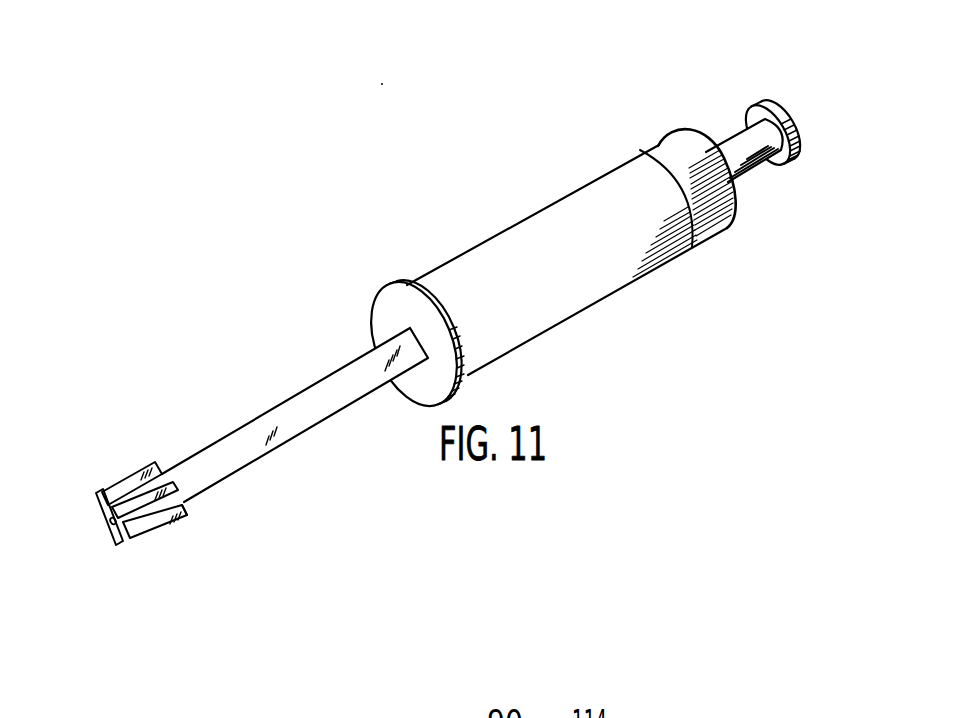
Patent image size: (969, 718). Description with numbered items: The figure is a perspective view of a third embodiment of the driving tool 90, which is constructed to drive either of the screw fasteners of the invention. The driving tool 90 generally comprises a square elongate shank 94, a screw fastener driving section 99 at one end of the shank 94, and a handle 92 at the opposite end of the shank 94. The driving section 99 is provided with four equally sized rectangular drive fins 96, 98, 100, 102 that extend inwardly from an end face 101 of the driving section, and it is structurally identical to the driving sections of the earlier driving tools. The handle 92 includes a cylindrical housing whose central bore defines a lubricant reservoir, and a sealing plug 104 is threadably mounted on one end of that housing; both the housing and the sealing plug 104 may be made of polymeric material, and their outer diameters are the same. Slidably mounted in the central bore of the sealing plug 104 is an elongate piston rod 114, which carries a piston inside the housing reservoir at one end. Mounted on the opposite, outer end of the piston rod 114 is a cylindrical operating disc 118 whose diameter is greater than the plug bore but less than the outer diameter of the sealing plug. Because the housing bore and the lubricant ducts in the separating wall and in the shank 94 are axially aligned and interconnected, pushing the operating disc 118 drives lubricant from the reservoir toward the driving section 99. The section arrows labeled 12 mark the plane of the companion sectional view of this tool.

The section line 12- 12 is at (102, 528).
The driving tool 90 is at (421, 142).
The handle 92 is at (661, 285).
The square elongate shank 94 is at (300, 421).
The drive fin 96 is at (178, 490).
The drive fin 98 is at (136, 480).
The screw fastener driving section 99 is at (186, 539).
The drive fin 100 is at (99, 534).
The end face 101 is at (121, 542).
The drive fin 102 is at (140, 538).
The sealing plug 104 is at (658, 152).
The piston rod 114 is at (733, 148).
The operating disc 118 is at (800, 118).